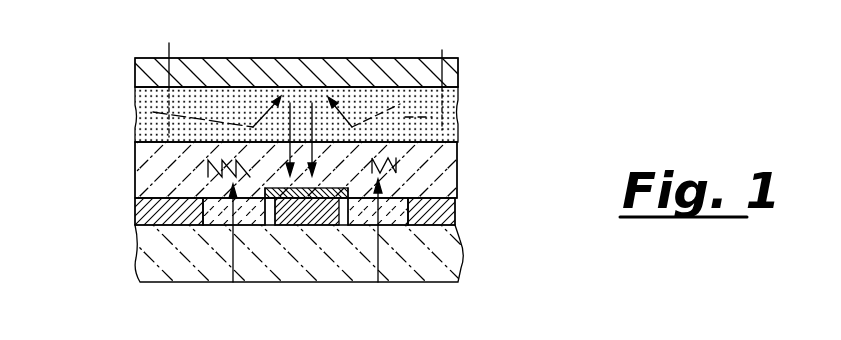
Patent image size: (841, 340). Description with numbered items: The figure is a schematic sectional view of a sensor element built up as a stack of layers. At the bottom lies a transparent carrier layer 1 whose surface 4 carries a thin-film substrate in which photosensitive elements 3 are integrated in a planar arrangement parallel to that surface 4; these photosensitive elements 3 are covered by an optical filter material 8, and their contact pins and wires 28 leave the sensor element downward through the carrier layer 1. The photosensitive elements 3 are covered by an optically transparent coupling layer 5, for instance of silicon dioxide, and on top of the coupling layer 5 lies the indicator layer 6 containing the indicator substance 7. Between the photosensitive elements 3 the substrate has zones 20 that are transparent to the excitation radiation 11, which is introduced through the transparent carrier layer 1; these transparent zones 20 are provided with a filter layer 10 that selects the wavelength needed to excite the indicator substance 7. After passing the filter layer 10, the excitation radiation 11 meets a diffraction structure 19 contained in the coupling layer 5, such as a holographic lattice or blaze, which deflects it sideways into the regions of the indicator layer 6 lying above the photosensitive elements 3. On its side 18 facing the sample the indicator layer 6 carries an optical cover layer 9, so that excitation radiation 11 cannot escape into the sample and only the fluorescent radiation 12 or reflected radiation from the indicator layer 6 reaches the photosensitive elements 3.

The carrier layer 1 is at (404, 227).
The photosensitive elements 3 is at (420, 193).
The surface 4 is at (430, 228).
The coupling layer 5 is at (166, 172).
The indicator layer 6 is at (460, 108).
The indicator substance 7 is at (238, 100).
The optical filter material 8 is at (264, 227).
The optical cover layer 9 is at (382, 68).
The filter layer 10 is at (205, 229).
The excitation radiation 11 is at (233, 252).
The fluorescent radiation 12 is at (248, 168).
The side 18 is at (185, 82).
The diffraction structure 19 is at (262, 173).
The transparent zones 20 is at (167, 227).
The contact pins and wires 28 is at (270, 226).